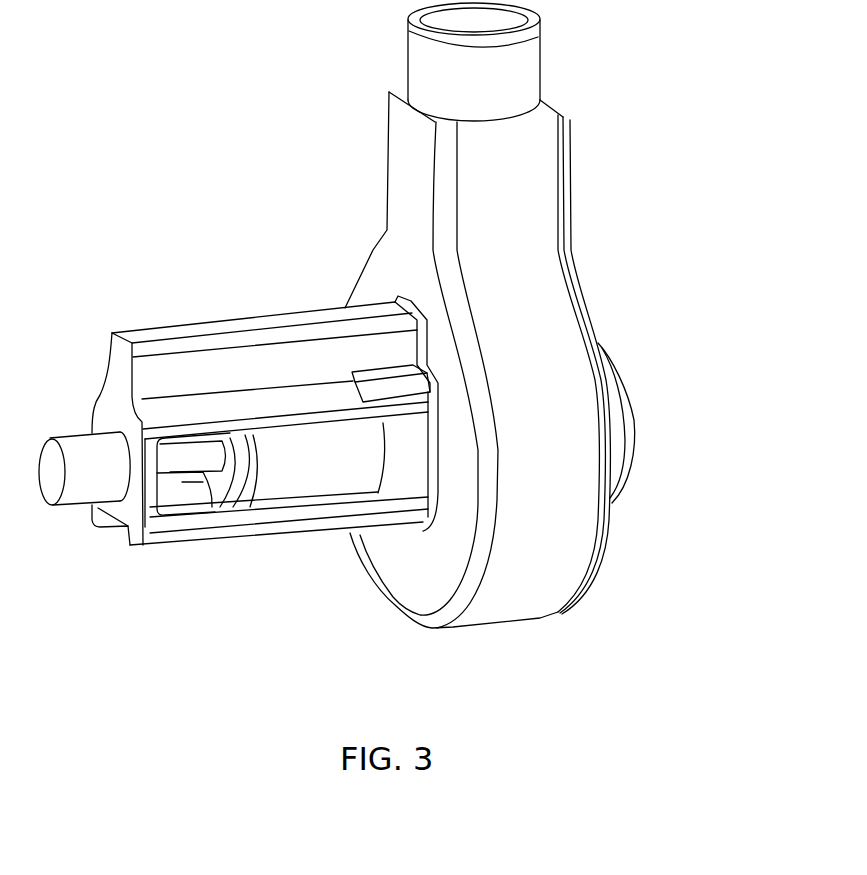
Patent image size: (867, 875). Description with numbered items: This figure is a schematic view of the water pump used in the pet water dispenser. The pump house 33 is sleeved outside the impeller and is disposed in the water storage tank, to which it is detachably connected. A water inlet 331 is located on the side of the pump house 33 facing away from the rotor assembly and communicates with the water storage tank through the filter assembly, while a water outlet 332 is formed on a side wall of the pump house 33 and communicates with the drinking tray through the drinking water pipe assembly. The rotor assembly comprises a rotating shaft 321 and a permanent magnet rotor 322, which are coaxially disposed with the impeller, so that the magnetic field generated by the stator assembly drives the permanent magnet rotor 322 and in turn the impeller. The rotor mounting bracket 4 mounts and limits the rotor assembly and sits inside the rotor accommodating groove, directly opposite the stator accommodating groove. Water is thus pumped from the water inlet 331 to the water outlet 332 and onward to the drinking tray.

The rotor mounting bracket 4 is at (213, 372).
The pump house 33 is at (558, 292).
The water inlet 331 is at (633, 423).
The water outlet 332 is at (500, 20).
The rotating shaft 321 is at (182, 462).
The permanent magnet rotor 322 is at (317, 483).